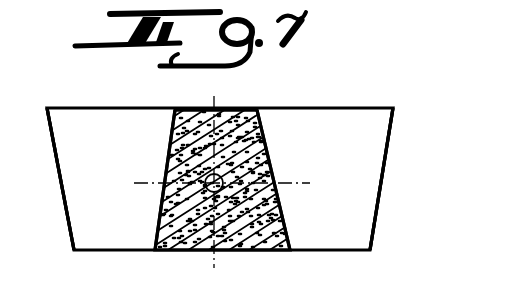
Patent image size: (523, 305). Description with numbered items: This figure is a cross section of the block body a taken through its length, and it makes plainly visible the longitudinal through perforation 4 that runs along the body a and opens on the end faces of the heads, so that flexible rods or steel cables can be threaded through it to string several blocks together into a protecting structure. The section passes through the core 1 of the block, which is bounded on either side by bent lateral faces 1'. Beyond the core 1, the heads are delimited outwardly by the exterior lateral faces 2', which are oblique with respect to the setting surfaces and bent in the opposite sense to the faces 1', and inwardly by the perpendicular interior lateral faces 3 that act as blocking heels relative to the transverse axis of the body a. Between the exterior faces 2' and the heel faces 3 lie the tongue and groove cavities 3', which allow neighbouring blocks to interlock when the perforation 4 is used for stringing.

The core of block 1 is at (237, 195).
The bent lateral faces of the core 1' is at (210, 161).
The exterior lateral faces of the heads 2' is at (220, 179).
The interior lateral faces of the heads 3 is at (220, 176).
The tongue and groove cavities 3' is at (220, 179).
The longitudinal through perforation 4 is at (267, 124).
The body of block a is at (206, 256).